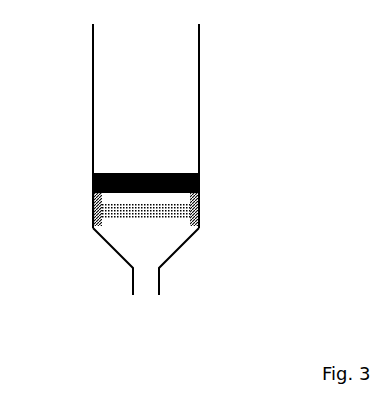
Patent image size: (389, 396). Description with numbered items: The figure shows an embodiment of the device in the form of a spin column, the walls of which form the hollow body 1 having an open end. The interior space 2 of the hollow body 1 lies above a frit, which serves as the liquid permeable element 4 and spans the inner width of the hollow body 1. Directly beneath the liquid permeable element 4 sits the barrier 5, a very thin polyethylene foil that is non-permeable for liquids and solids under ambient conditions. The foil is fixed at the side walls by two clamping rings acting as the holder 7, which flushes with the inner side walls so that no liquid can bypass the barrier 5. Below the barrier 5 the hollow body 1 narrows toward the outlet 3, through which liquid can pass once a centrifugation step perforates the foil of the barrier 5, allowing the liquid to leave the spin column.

The hollow body 1 is at (200, 73).
The interior space 2 is at (144, 31).
The outlet 3 is at (146, 276).
The liquid permeable element 4 is at (199, 184).
The barrier 5 is at (190, 209).
The holder 7 is at (101, 221).